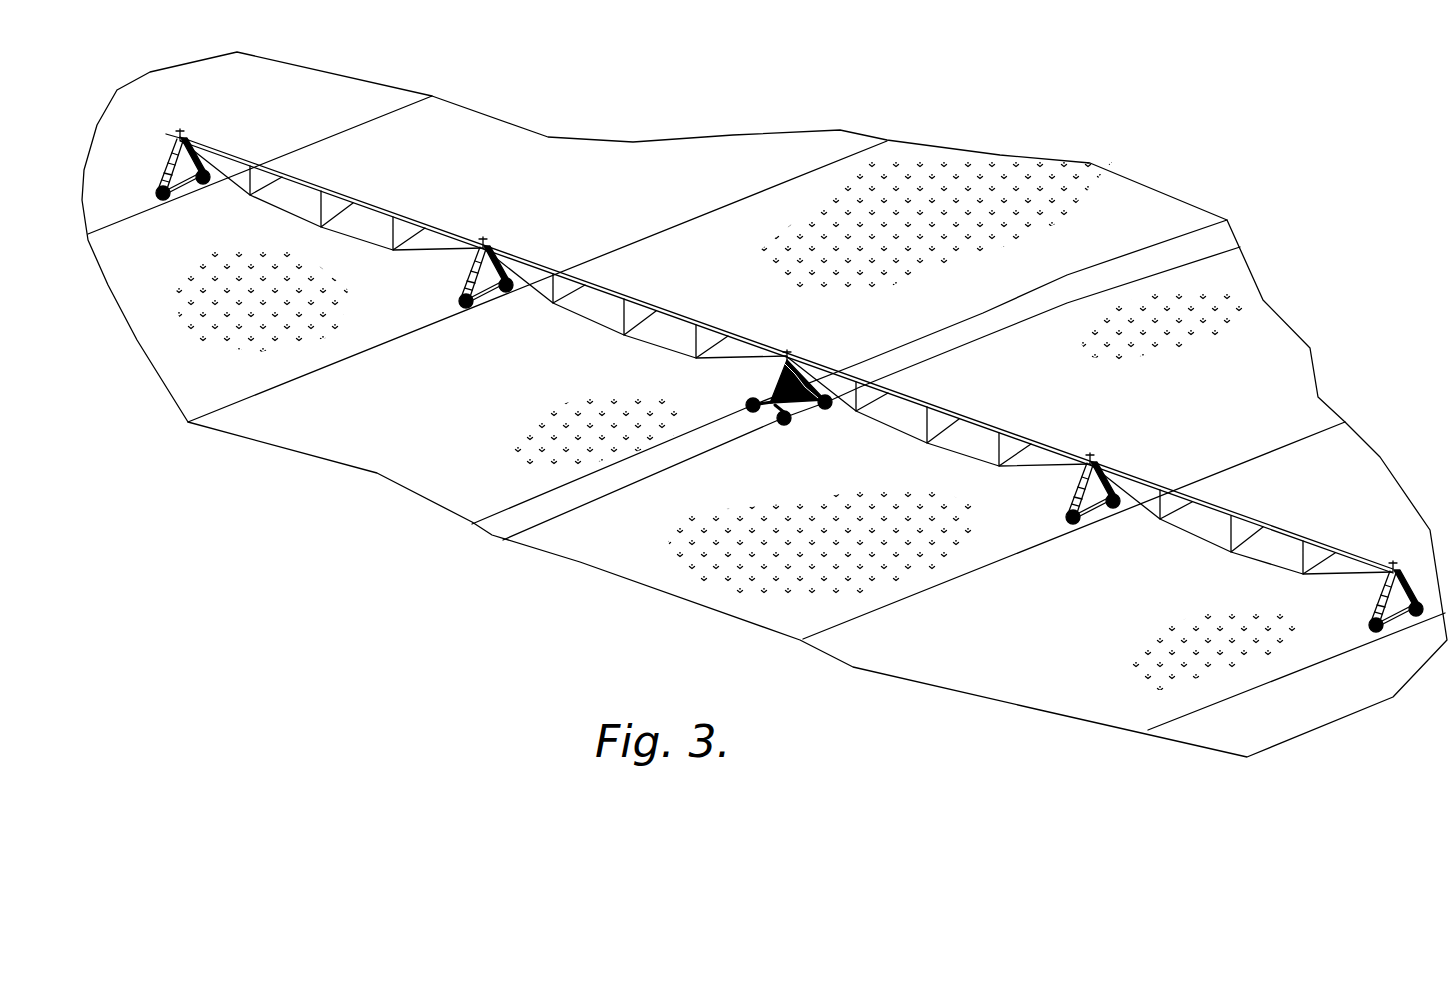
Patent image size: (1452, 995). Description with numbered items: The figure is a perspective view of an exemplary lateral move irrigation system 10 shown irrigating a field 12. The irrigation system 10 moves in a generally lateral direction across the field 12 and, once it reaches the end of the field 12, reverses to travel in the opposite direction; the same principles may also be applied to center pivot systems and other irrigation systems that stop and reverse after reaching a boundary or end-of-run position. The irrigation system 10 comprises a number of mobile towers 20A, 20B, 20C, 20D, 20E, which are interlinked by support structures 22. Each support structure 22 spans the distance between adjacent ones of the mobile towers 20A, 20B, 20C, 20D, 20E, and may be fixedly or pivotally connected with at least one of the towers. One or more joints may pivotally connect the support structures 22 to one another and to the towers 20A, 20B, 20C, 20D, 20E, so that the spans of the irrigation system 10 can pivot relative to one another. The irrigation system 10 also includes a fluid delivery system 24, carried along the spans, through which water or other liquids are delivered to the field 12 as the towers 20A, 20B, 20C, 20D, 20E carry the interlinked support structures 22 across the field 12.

The irrigation system 10 is at (789, 402).
The field 12 is at (1018, 635).
The mobile tower 20A is at (200, 119).
The mobile tower 20B is at (462, 338).
The mobile tower 20C is at (803, 452).
The mobile tower 20D is at (1095, 556).
The mobile tower 20E is at (1373, 666).
The support structure 22 is at (320, 226).
The fluid delivery system 24 is at (377, 211).